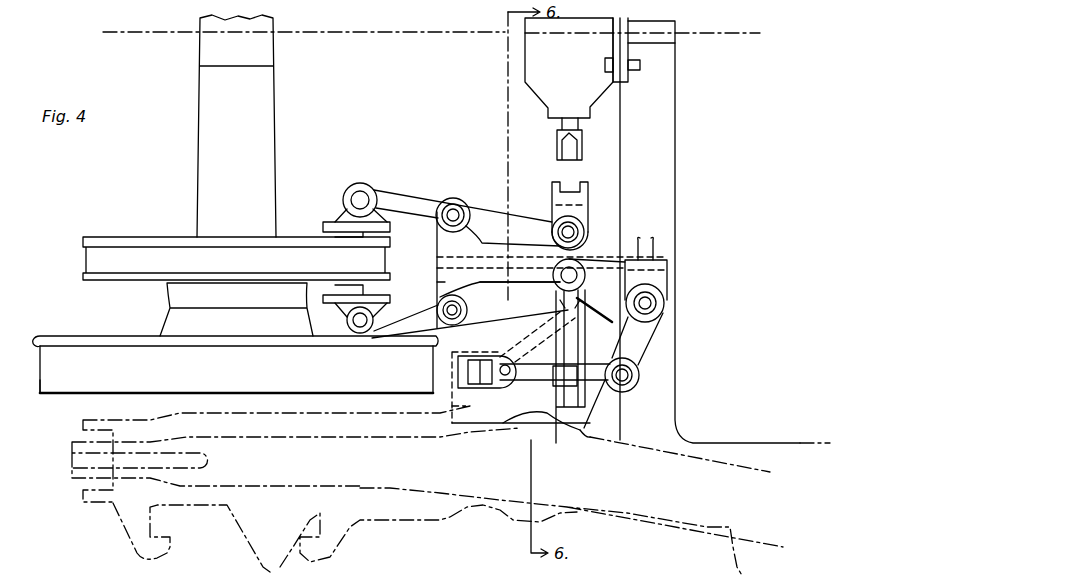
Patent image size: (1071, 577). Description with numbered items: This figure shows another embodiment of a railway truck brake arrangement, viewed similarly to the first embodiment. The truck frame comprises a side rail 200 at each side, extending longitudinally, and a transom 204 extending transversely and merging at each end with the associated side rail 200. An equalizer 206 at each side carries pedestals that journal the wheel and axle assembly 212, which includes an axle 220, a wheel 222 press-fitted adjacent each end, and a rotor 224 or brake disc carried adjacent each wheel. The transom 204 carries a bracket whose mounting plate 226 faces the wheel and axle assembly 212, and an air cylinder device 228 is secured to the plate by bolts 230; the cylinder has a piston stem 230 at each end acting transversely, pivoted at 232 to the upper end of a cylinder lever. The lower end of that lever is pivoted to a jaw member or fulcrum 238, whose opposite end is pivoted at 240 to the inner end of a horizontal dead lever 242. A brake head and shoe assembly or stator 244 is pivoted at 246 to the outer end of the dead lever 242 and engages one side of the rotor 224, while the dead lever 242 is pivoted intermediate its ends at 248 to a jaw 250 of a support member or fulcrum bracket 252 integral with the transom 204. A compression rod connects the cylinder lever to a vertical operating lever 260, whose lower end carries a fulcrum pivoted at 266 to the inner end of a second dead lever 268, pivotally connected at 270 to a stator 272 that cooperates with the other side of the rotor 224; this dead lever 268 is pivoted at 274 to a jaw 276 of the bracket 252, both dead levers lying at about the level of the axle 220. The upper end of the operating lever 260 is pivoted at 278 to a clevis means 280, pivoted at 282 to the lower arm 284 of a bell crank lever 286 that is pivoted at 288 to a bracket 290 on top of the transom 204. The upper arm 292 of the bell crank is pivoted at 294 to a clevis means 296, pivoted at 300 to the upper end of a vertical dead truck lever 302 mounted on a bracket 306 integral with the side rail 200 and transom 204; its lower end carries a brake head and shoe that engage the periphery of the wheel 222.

The side rail 200 is at (405, 487).
The transom 204 is at (677, 187).
The equalizer 206 is at (72, 480).
The wheel and axle assembly 212 is at (33, 337).
The axle 220 is at (200, 161).
The wheel 222 is at (45, 394).
The rotor 224 is at (87, 237).
The mounting plate 226 is at (630, 82).
The air cylinder device 228 is at (527, 70).
The bolts / piston stem 230 is at (641, 65).
The pivot 232 is at (560, 152).
The jaw member or fulcrum 238 is at (588, 185).
The pivot 240 is at (585, 230).
The dead lever 242 is at (397, 192).
The brake head and shoe assembly or stator 244 is at (330, 223).
The pivot 246 is at (360, 193).
The pivot 248 is at (453, 205).
The jaw 250 is at (437, 243).
The support member or fulcrum bracket 252 is at (500, 284).
The operating lever 260 is at (580, 302).
The pivot 266 is at (548, 302).
The dead lever 268 is at (490, 320).
The pivot 270 is at (356, 333).
The stator or brake head and shoe assembly 272 is at (340, 305).
The pivot 274 is at (437, 310).
The jaw 276 is at (437, 282).
The pivot 278 is at (565, 348).
The clevis means 280 is at (550, 423).
The pivot 282 is at (586, 268).
The lower arm 284 is at (667, 285).
The bell crank lever 286 is at (665, 298).
The pivot 288 is at (652, 310).
The bracket 290 is at (663, 258).
The upper arm 292 is at (650, 340).
The pivot 294 is at (640, 380).
The clevis means 296 is at (618, 392).
The pivot 300 is at (497, 386).
The dead truck lever 302 is at (465, 369).
The bracket 306 is at (582, 432).